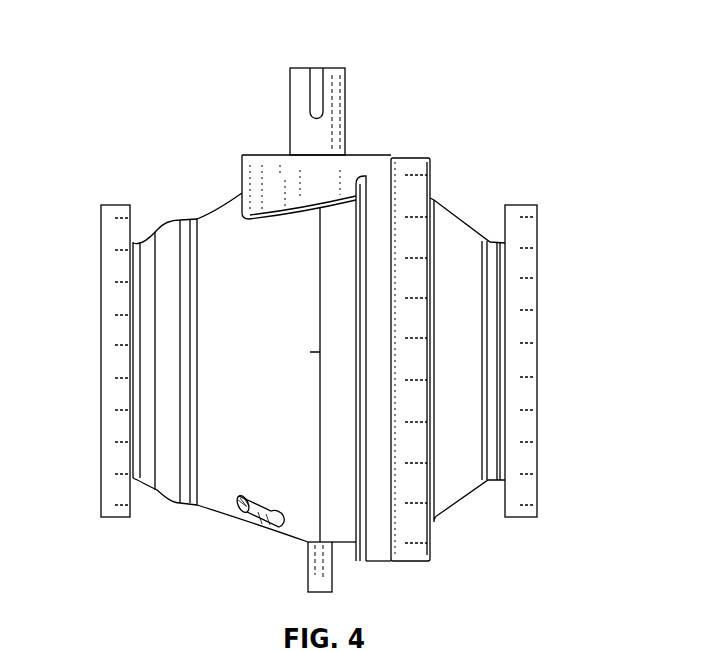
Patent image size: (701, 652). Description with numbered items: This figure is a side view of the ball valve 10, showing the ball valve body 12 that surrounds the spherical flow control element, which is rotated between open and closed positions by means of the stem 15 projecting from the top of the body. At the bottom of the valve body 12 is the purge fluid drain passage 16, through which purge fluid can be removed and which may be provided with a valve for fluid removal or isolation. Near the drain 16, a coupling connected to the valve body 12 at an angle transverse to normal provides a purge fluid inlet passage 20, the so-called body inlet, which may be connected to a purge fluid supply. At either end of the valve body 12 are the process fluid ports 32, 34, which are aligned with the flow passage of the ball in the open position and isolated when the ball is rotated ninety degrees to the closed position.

The ball valve 10 is at (483, 62).
The ball valve body 12 is at (231, 521).
The stem 15 is at (347, 110).
The purge fluid drain passage 16 is at (336, 557).
The purge fluid inlet passage 20 is at (262, 497).
The process fluid port 32 is at (112, 333).
The process fluid port 34 is at (524, 336).